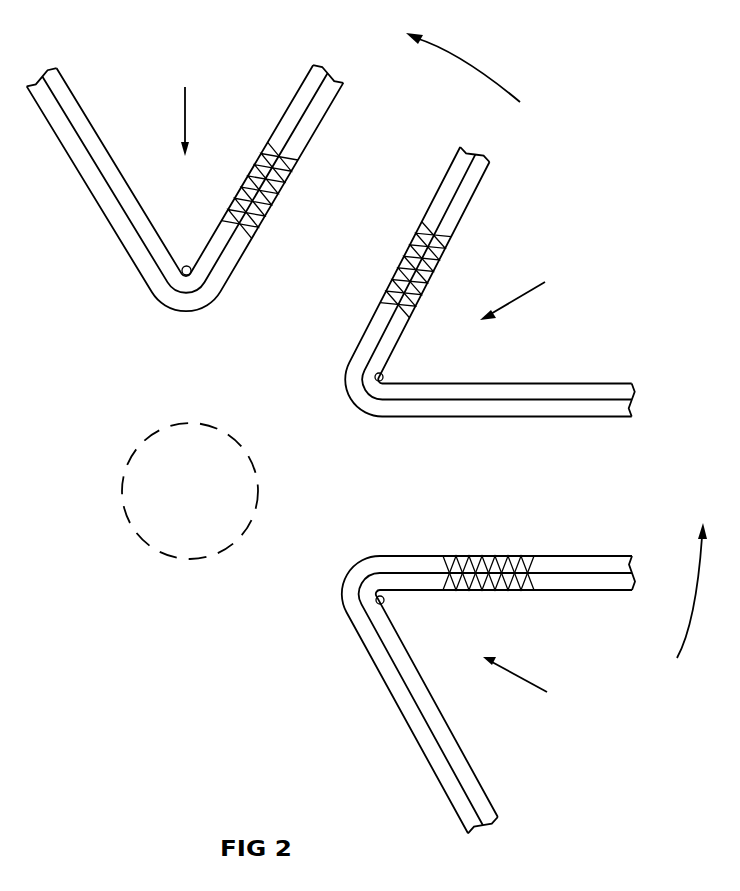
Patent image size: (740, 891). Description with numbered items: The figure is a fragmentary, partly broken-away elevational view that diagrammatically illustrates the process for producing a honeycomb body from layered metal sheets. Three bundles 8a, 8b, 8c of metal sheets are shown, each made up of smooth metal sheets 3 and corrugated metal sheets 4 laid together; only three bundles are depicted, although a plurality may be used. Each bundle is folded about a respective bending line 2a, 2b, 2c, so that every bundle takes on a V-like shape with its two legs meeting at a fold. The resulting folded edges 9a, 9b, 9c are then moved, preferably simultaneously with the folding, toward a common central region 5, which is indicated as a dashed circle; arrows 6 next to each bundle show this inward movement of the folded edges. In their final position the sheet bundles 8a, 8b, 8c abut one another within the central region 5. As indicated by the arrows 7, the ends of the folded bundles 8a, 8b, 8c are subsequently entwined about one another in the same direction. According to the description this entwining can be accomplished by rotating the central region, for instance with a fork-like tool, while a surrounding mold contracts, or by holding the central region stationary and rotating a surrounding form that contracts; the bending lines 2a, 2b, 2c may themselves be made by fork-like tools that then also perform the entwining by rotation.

The bending line 2a is at (186, 265).
The bending line 2b is at (382, 374).
The bending line 2c is at (384, 602).
The smooth metal sheet 3 is at (315, 132).
The corrugated metal sheet 4 is at (282, 187).
The central region 5 is at (231, 541).
The arrows 6 is at (190, 108).
The arrows 7 is at (462, 60).
The bundle of metal sheets 8a is at (73, 165).
The bundle of metal sheets 8b is at (366, 331).
The bundle of metal sheets 8c is at (390, 556).
The folded edge 9a is at (178, 311).
The folded edge 9b is at (346, 398).
The folded edge 9c is at (344, 582).